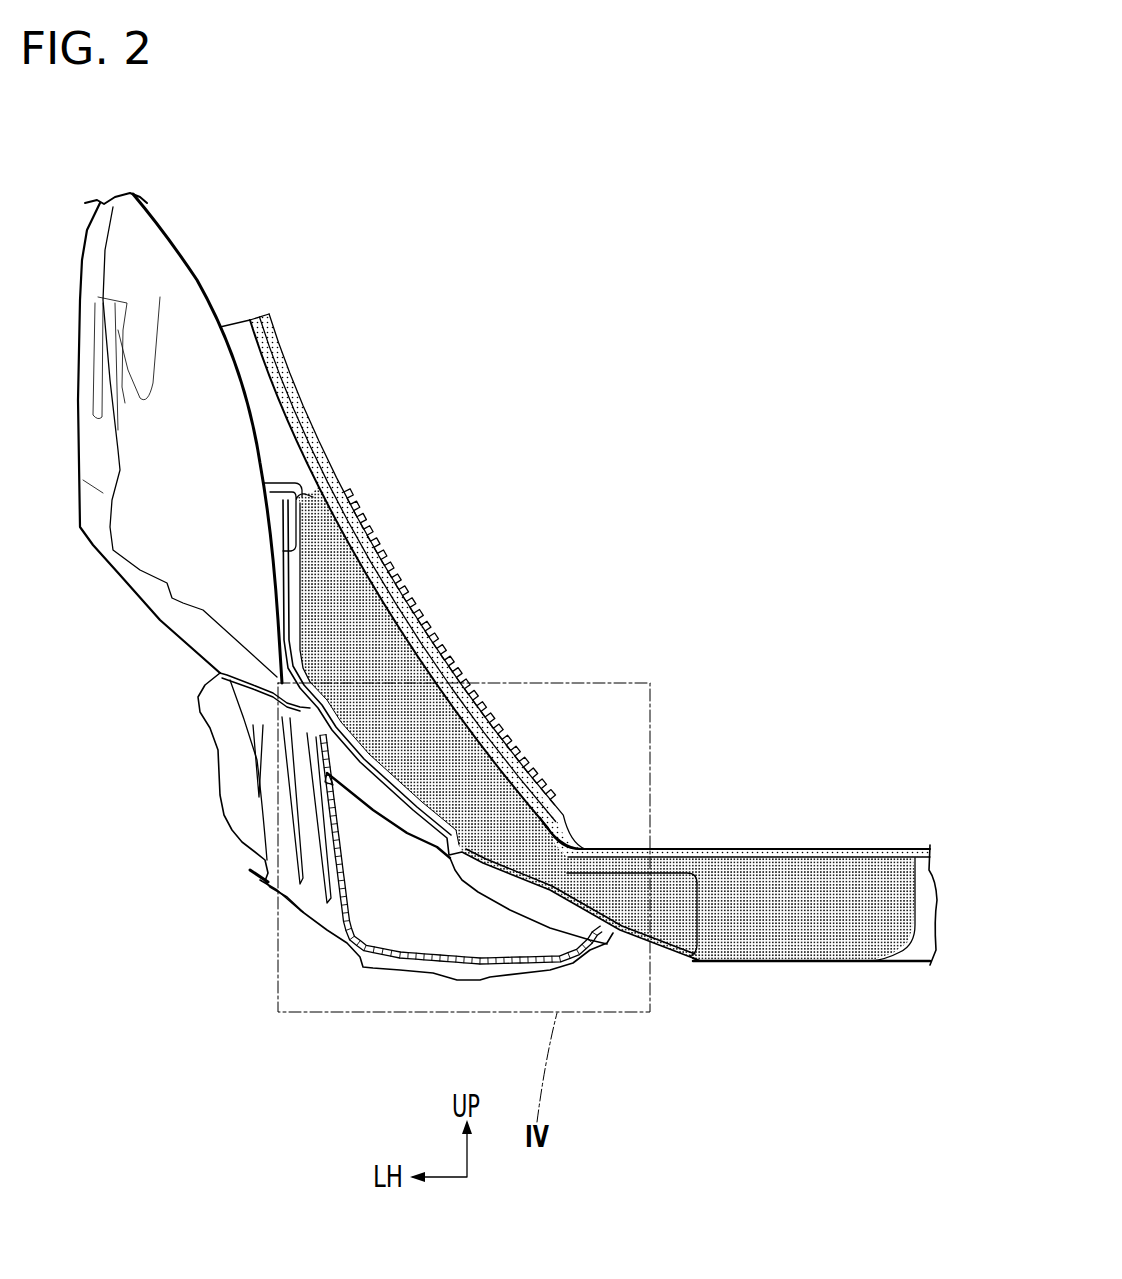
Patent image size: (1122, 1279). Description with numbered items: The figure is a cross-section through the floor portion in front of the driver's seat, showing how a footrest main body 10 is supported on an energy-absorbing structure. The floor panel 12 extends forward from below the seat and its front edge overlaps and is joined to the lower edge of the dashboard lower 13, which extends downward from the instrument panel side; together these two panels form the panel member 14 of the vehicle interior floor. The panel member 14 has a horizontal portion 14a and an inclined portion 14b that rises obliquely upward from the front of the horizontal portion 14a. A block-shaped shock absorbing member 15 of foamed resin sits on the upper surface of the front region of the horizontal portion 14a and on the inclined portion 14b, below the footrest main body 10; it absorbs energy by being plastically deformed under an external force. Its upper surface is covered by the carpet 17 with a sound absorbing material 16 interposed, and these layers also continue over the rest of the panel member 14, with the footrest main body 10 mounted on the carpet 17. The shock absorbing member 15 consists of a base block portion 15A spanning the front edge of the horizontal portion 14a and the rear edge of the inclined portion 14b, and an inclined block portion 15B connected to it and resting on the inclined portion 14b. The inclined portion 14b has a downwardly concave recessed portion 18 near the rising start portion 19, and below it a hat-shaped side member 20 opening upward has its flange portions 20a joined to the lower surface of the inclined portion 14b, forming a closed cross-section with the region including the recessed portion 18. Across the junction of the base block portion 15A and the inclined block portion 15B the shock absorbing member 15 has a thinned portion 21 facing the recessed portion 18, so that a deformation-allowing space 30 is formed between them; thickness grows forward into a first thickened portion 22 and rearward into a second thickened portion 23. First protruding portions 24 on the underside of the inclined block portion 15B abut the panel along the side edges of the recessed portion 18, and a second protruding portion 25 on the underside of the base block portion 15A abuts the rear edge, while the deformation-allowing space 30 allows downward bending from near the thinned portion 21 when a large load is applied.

The footrest main body 10 is at (450, 657).
The floor panel 12 is at (761, 965).
The dashboard lower 13 is at (197, 280).
The panel member 14 is at (507, 664).
The horizontal portion 14a is at (800, 967).
The inclined portion 14b is at (407, 823).
The shock absorbing member 15 is at (383, 593).
The base block portion 15A is at (673, 867).
The inclined block portion 15B is at (352, 558).
The sound absorbing material 16 is at (580, 850).
The carpet 17 is at (553, 830).
The recessed portion 18 is at (455, 887).
The rising start portion 19 is at (653, 947).
The side member 20 is at (420, 870).
The flange portions 20a is at (316, 718).
The thinned portion 21 is at (543, 942).
The first thickened portion 22 is at (375, 737).
The second thickened portion 23 is at (674, 957).
The first protruding portions 24 is at (445, 858).
The second protruding portion 25 is at (592, 945).
The deformation-allowing space 30 is at (458, 905).